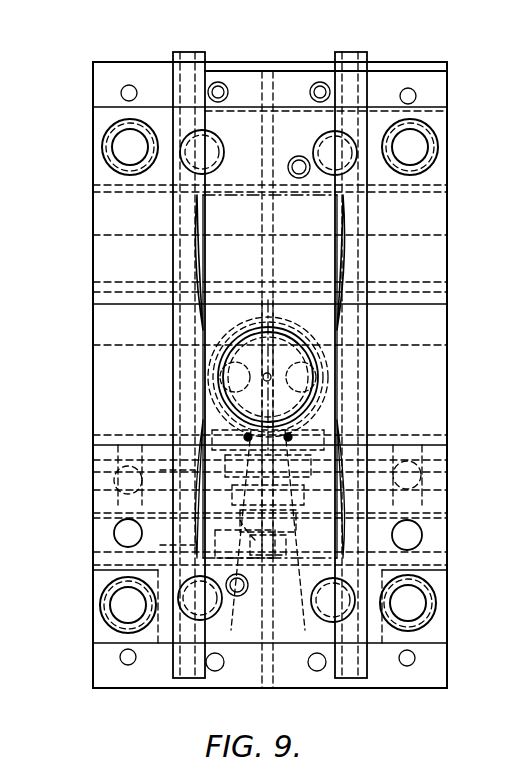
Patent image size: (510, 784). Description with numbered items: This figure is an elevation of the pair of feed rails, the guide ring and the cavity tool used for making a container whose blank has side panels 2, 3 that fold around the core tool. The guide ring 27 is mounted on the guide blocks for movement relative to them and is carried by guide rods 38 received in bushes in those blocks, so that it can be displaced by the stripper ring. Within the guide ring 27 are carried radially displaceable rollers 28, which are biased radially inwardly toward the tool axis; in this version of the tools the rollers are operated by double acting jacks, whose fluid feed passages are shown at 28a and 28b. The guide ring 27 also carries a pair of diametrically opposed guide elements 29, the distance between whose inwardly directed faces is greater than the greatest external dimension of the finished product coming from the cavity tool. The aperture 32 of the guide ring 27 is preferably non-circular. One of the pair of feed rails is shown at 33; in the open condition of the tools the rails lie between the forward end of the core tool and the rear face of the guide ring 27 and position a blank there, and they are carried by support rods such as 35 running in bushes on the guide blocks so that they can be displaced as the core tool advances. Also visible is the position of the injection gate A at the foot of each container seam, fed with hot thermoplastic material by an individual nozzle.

The side panel 2 is at (292, 198).
The side panel 3 is at (305, 520).
The guide ring 27 is at (428, 634).
The rollers 28 is at (285, 458).
The fluid feed passage 28a is at (182, 490).
The fluid feed passage 28b is at (182, 548).
The guide elements 29 is at (318, 380).
The aperture 32 is at (290, 345).
The feed rail 33 is at (187, 88).
The support rod 35 is at (221, 82).
The guide rod 38 is at (412, 602).
The injection gate A is at (212, 371).